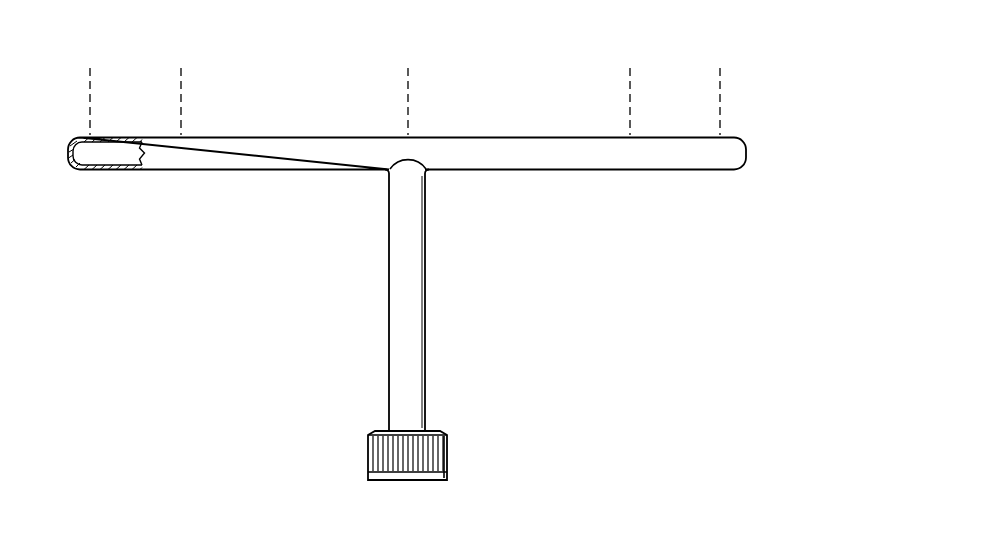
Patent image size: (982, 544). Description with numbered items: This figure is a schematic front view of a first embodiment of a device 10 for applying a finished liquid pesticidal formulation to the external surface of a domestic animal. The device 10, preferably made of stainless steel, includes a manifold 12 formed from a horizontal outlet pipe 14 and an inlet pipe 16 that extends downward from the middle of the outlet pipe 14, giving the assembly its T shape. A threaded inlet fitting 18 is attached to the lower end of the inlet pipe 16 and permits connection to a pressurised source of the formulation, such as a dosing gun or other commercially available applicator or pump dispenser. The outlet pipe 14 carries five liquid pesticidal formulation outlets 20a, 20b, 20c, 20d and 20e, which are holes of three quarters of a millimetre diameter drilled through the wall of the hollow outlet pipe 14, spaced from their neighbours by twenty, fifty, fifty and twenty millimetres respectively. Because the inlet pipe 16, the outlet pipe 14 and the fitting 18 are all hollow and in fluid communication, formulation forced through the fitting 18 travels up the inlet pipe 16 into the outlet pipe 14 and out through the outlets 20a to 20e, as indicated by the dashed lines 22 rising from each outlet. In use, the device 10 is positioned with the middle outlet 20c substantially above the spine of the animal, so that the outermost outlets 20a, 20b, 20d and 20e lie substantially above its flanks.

The device 10 is at (224, 333).
The manifold 12 is at (459, 130).
The outlet pipe 14 is at (533, 152).
The inlet pipe 16 is at (412, 325).
The threaded inlet fitting 18 is at (433, 452).
The liquid pesticidal formulation outlet 20a is at (90, 134).
The liquid pesticidal formulation outlet 20b is at (182, 134).
The liquid pesticidal formulation outlet 20c is at (407, 134).
The liquid pesticidal formulation outlet 20d is at (630, 134).
The liquid pesticidal formulation outlet 20e is at (720, 134).
The dashed lines 22 is at (87, 88).